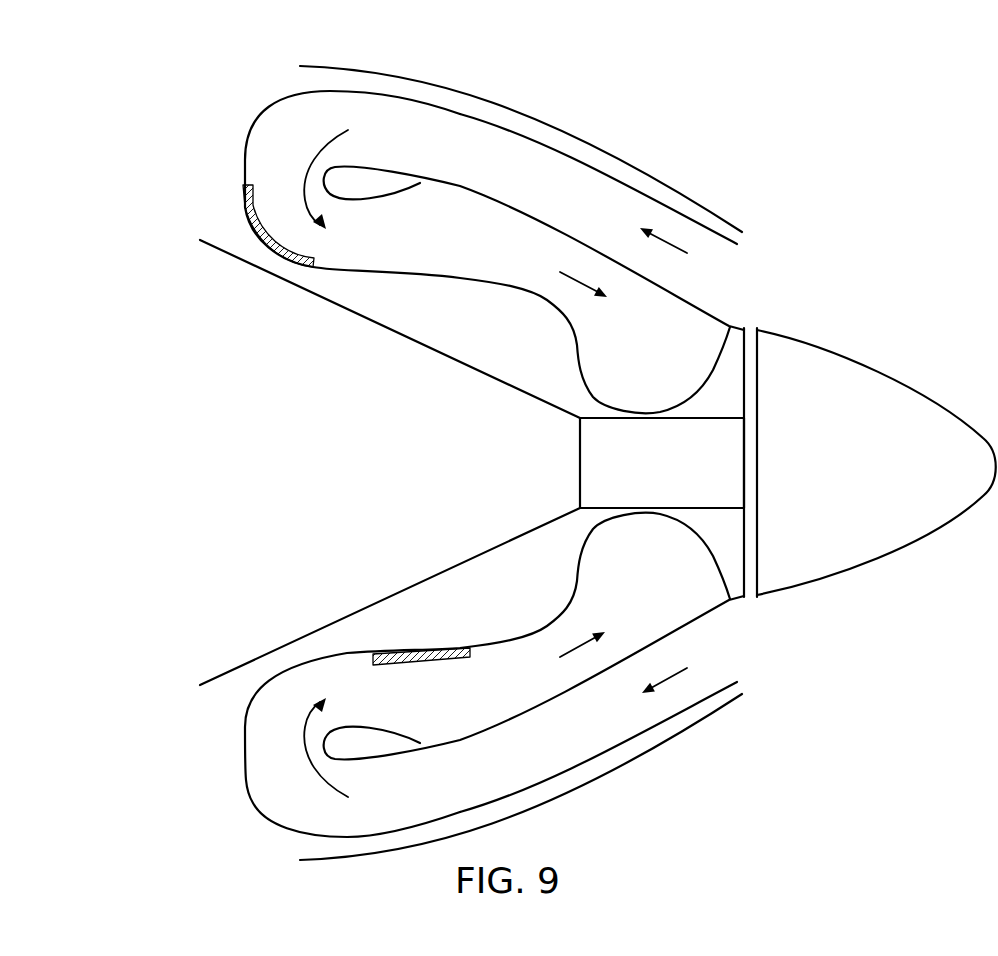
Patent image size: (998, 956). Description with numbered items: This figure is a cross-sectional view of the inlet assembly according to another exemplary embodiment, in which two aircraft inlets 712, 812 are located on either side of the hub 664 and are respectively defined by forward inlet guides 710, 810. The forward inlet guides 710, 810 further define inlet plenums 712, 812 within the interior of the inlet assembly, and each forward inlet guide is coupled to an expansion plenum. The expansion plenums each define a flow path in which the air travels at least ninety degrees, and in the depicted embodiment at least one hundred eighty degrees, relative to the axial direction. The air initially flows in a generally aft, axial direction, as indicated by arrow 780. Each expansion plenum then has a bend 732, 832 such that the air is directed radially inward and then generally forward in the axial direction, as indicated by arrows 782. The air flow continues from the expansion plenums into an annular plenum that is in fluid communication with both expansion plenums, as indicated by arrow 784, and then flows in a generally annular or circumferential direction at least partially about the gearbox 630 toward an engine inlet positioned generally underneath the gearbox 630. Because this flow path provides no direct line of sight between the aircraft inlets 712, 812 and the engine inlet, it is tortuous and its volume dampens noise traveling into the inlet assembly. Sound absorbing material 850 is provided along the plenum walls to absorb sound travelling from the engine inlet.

The forward inlet guide 810 is at (742, 233).
The aircraft inlet 812 is at (738, 252).
The bend 832 is at (260, 165).
The forward inlet guide 710 is at (742, 695).
The aircraft inlet 712 is at (722, 667).
The bend 732 is at (253, 726).
The sound absorbing material 850 is at (248, 207).
The arrow 782 is at (307, 168).
The arrow 784 is at (562, 272).
The arrow 780 is at (685, 254).
The gearbox 630 is at (580, 466).
The hub 664 is at (900, 547).